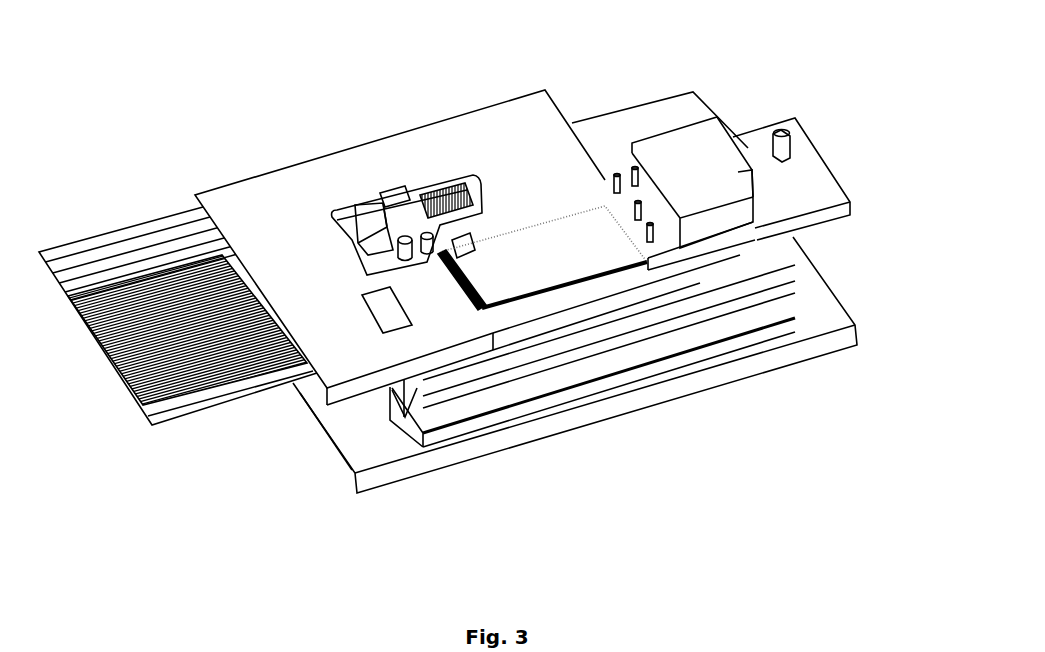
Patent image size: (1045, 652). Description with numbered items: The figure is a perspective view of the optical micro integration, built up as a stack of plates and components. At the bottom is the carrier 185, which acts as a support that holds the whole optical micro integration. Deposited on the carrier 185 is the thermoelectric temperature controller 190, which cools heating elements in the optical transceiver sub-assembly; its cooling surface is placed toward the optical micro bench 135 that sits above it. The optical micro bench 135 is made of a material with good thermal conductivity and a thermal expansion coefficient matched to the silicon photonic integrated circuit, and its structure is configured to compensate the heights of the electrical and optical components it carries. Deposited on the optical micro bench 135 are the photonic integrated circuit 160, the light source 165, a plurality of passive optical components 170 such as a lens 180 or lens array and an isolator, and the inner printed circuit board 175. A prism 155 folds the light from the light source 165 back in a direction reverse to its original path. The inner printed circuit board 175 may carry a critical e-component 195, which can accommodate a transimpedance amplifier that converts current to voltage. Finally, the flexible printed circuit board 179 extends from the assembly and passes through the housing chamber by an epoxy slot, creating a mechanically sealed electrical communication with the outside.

The optical micro bench 135 is at (650, 300).
The prism 155 is at (353, 237).
The photonic integrated circuit 160 is at (537, 215).
The light source 165 is at (442, 193).
The passive optical components 170 is at (365, 202).
The inner printed circuit board 175 is at (503, 193).
The flexible printed circuit board 179 is at (122, 222).
The lens 180 is at (767, 140).
The carrier 185 is at (522, 448).
The thermoelectric temperature controller 190 is at (417, 270).
The critical e-component 195 is at (370, 333).